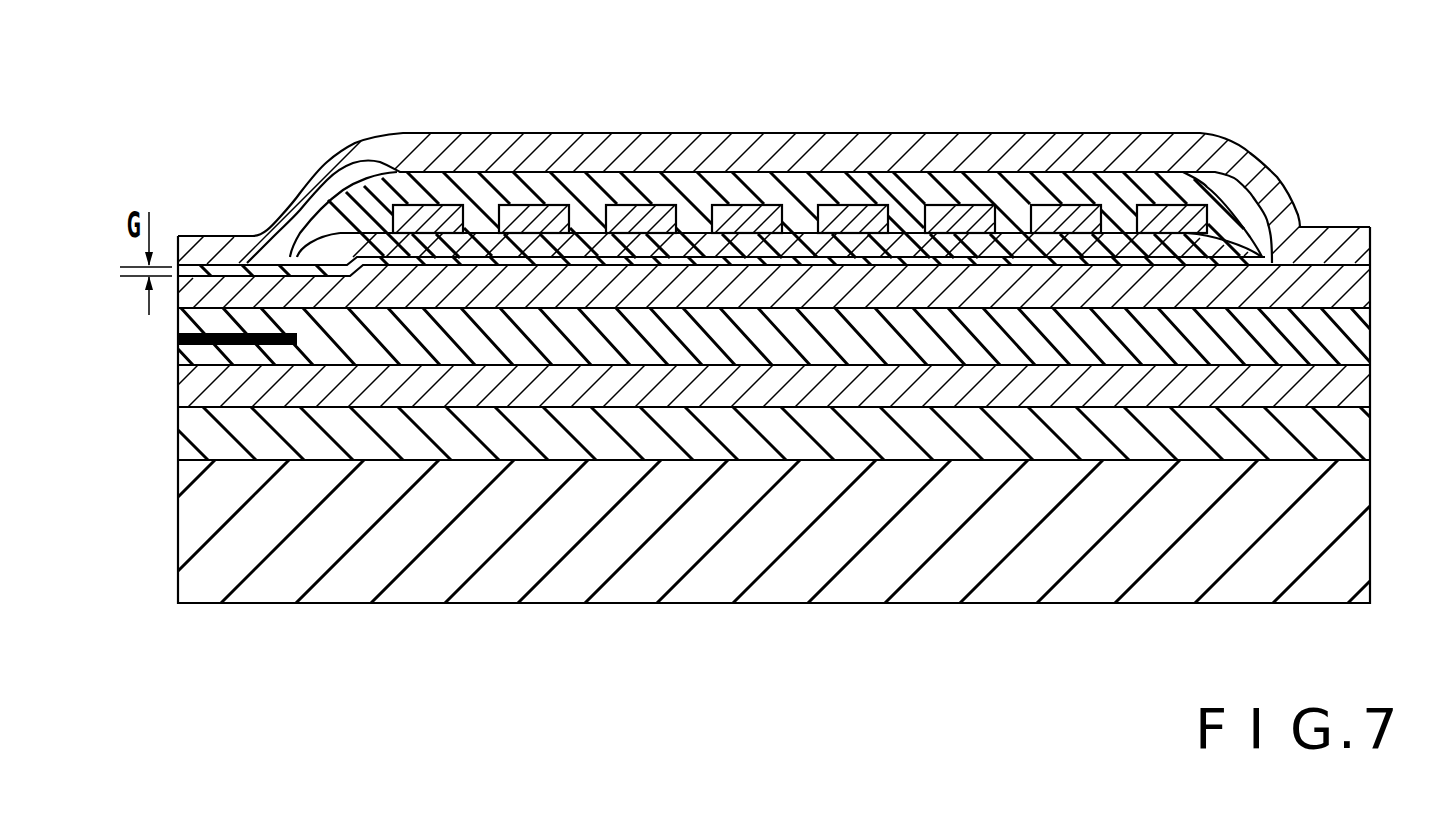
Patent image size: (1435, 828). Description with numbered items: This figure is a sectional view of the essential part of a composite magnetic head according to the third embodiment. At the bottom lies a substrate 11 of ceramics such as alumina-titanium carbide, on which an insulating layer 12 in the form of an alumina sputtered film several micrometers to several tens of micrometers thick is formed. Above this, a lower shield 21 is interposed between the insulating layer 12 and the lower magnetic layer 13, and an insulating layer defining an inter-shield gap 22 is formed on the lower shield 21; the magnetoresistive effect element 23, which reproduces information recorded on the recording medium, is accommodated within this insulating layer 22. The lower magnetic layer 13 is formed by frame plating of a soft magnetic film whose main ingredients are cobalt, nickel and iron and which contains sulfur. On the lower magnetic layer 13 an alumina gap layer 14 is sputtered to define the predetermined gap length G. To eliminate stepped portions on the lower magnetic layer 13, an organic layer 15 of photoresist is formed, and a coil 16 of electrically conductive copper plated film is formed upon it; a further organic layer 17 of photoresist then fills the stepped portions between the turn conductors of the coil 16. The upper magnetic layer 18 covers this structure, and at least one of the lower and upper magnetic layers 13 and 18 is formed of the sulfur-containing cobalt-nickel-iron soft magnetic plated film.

The substrate 11 is at (640, 570).
The insulating layer 12 is at (752, 450).
The lower magnetic layer 13 is at (1348, 288).
The gap layer 14 is at (913, 255).
The organic layer 15 is at (1013, 250).
The coil 16 is at (846, 198).
The organic layer 17 is at (608, 185).
The upper magnetic layer 18 is at (472, 143).
The lower shield 21 is at (395, 395).
The insulating layer defining an inter-shield gap 22 is at (530, 350).
The magnetoresistive effect element 23 is at (180, 340).